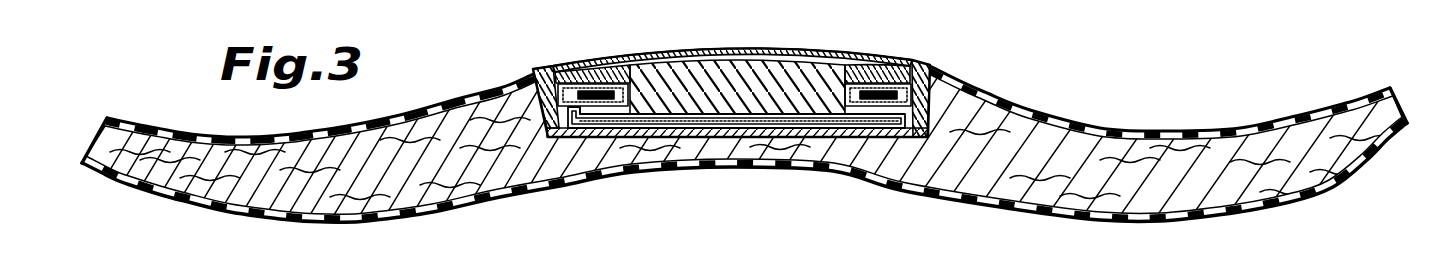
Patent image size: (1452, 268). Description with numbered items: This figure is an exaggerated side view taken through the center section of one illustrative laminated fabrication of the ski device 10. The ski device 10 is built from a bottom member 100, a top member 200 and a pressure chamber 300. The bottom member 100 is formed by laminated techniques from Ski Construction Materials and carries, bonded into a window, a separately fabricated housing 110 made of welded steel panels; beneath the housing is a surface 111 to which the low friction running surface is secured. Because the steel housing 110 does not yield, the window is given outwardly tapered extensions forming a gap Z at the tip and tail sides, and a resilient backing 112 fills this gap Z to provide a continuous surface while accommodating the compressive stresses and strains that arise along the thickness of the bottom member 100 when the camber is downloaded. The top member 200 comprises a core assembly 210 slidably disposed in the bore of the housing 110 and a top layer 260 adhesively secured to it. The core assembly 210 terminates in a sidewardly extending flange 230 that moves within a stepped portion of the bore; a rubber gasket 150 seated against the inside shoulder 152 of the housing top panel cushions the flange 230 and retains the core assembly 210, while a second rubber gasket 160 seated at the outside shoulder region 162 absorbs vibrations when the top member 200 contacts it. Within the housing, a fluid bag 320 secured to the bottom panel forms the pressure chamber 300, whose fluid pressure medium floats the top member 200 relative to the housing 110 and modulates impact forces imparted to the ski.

The ski device 10 is at (1126, 28).
The bottom member 100 is at (1079, 94).
The housing 110 is at (923, 128).
The surface below housing portion 111 is at (813, 190).
The resilient backing 112 is at (934, 70).
The gap (window extension) Z is at (942, 95).
The top member 200 is at (738, 41).
The rubber gasket 150 is at (632, 80).
The inside shoulder 152 is at (530, 78).
The top layer 260 is at (943, 20).
The core assembly 210 is at (792, 67).
The rubber gasket 160 is at (601, 97).
The outside shoulder region 162 is at (586, 77).
The pressure chamber 300 is at (740, 131).
The fluid bag 320 is at (628, 116).
The sidewardly extending flange 230 is at (591, 122).